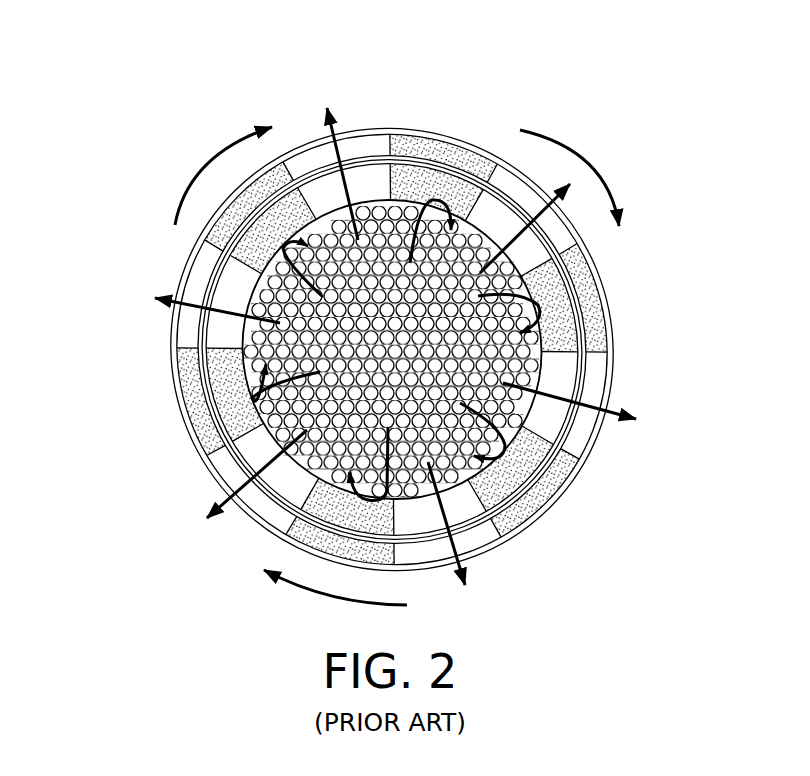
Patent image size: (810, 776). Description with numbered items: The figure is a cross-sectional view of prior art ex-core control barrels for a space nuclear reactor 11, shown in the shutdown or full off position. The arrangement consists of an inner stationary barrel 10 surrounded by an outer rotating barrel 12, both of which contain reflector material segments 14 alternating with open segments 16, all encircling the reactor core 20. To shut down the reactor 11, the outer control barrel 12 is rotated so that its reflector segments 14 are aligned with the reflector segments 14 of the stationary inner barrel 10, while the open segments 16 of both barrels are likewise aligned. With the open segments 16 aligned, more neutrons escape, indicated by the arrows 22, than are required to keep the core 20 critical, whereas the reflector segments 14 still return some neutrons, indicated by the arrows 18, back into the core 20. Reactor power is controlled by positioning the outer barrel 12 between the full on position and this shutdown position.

The inner stationary barrel 10 is at (586, 290).
The nuclear reactor 11 is at (166, 135).
The outer rotating barrel 12 is at (570, 510).
The reflector material segments 14 is at (440, 150).
The open segments 16 is at (524, 188).
The neutrons 18 is at (468, 316).
The core 20 is at (245, 286).
The escaping neutrons 22 is at (643, 419).